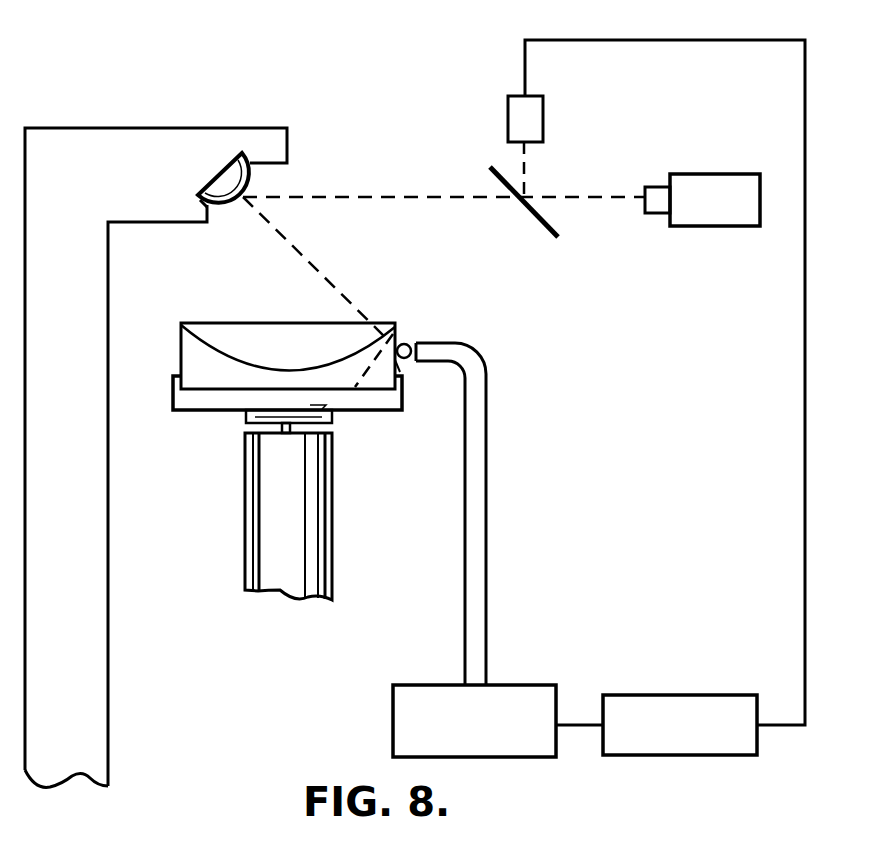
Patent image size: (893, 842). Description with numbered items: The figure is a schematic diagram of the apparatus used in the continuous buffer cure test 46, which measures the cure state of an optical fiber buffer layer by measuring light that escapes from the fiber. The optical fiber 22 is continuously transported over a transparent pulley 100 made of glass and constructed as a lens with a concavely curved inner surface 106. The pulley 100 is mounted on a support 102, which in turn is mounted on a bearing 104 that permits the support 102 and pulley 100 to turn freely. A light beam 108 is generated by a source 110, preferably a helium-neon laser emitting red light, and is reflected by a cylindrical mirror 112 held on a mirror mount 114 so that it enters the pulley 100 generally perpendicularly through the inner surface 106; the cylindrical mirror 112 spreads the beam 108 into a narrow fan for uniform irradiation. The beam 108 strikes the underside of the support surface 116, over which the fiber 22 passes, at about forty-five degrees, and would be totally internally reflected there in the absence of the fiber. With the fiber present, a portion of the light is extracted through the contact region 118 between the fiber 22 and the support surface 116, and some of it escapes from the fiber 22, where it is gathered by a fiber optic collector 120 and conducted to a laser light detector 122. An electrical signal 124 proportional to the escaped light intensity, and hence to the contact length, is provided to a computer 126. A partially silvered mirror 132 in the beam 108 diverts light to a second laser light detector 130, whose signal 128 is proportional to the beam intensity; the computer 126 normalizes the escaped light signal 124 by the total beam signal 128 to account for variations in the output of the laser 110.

The continuous buffer cure test 46 is at (68, 54).
The mirror mount 114 is at (159, 127).
The cylindrical mirror 112 is at (250, 176).
The light beam 108 is at (300, 252).
The contact region 118 is at (388, 336).
The optical fiber 22 is at (409, 343).
The transparent pulley 100 is at (181, 349).
The concavely curved inner surface 106 is at (214, 357).
The support surface 116 is at (400, 372).
The support 102 is at (193, 411).
The bearing 104 is at (245, 529).
The fiber optic collector 120 is at (465, 570).
The laser light detector 122 is at (414, 684).
The electrical signal 124 is at (573, 722).
The computer 126 is at (740, 693).
The signal 128 is at (803, 354).
The laser light detector 130 is at (508, 122).
The partially silvered mirror 132 is at (528, 220).
The source 110 is at (690, 227).